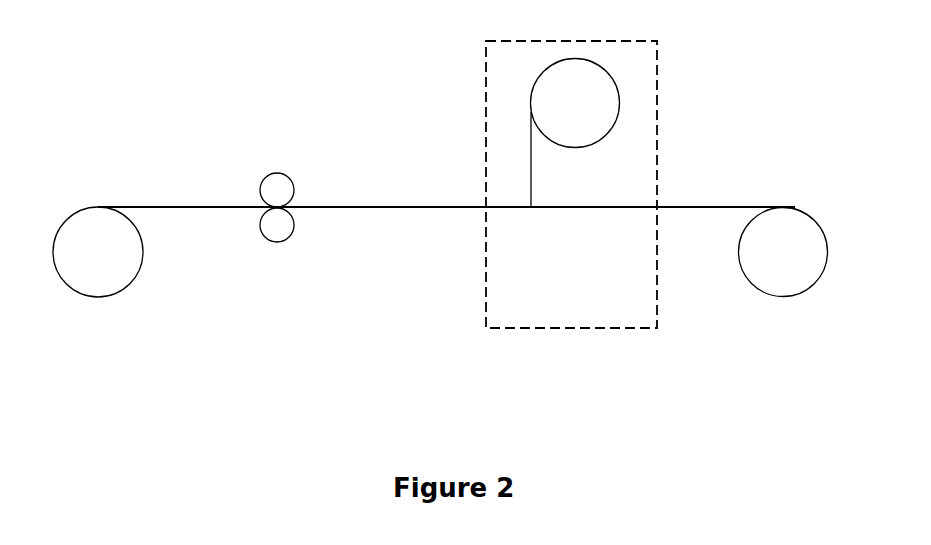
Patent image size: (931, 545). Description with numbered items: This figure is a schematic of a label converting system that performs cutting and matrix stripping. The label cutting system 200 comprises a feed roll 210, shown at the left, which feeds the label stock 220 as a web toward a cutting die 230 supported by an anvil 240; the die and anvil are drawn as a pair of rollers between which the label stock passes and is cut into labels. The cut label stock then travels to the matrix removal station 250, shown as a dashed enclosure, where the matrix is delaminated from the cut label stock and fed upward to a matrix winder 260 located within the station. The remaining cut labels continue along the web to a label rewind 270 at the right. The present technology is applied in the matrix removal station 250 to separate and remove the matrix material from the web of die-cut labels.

The label cutting system 200 is at (307, 333).
The feed roll 210 is at (92, 297).
The label stock 220 is at (157, 207).
The cutting die 230 is at (277, 173).
The anvil 240 is at (287, 240).
The matrix removal station 250 is at (546, 328).
The matrix winder 260 is at (617, 92).
The label rewind 270 is at (778, 297).